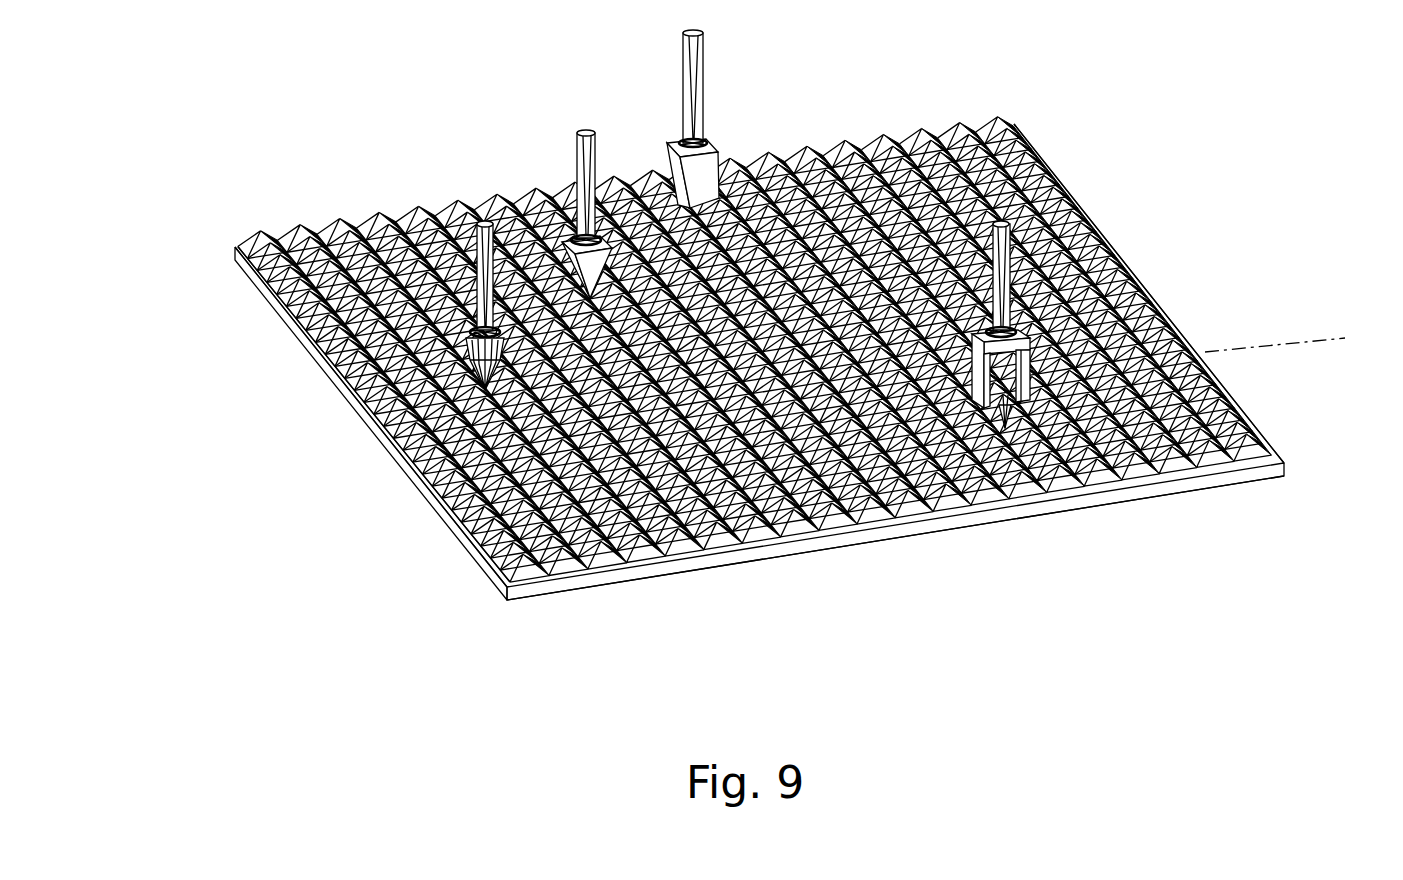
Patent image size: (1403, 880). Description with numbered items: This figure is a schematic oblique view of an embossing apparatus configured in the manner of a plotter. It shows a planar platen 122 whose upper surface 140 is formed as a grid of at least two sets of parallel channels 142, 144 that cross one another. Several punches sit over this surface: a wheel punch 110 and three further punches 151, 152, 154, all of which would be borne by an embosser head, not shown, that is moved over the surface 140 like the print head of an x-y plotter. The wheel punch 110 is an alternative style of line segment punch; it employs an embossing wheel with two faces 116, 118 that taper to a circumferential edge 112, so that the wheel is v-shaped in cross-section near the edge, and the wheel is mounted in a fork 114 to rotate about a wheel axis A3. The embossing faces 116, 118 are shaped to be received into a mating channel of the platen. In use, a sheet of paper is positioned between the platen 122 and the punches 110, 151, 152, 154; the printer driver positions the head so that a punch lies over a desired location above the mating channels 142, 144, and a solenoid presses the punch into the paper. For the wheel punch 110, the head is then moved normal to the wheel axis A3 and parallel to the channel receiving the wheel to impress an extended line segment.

The wheel punch 110 is at (1080, 215).
The circumferential edge 112 is at (1023, 396).
The fork 114 is at (935, 488).
The embossing face 116 is at (1137, 490).
The embossing face 118 is at (1005, 428).
The planar platen 122 is at (318, 360).
The upper surface 140 is at (427, 448).
The parallel channels 142 is at (510, 553).
The parallel channels 144 is at (366, 228).
The punch 151 is at (703, 100).
The punch 152 is at (592, 130).
The punch 154 is at (483, 222).
The wheel axis A3 is at (1298, 356).